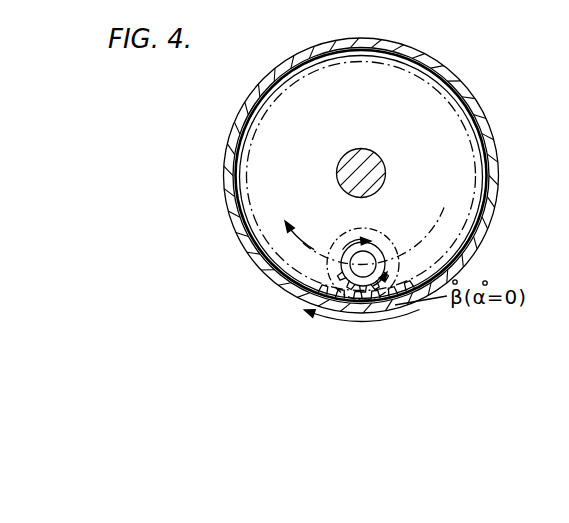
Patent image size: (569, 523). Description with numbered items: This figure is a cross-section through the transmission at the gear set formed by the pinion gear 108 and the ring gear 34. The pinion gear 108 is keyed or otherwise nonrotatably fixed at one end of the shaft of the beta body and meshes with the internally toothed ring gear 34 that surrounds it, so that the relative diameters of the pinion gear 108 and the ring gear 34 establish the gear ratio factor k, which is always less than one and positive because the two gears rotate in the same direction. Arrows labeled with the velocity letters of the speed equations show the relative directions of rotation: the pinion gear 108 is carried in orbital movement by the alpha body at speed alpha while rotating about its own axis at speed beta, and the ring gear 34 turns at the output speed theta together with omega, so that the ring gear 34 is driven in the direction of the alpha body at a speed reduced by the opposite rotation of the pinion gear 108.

The ring gear 34 is at (492, 163).
The pinion gear 108 is at (375, 248).